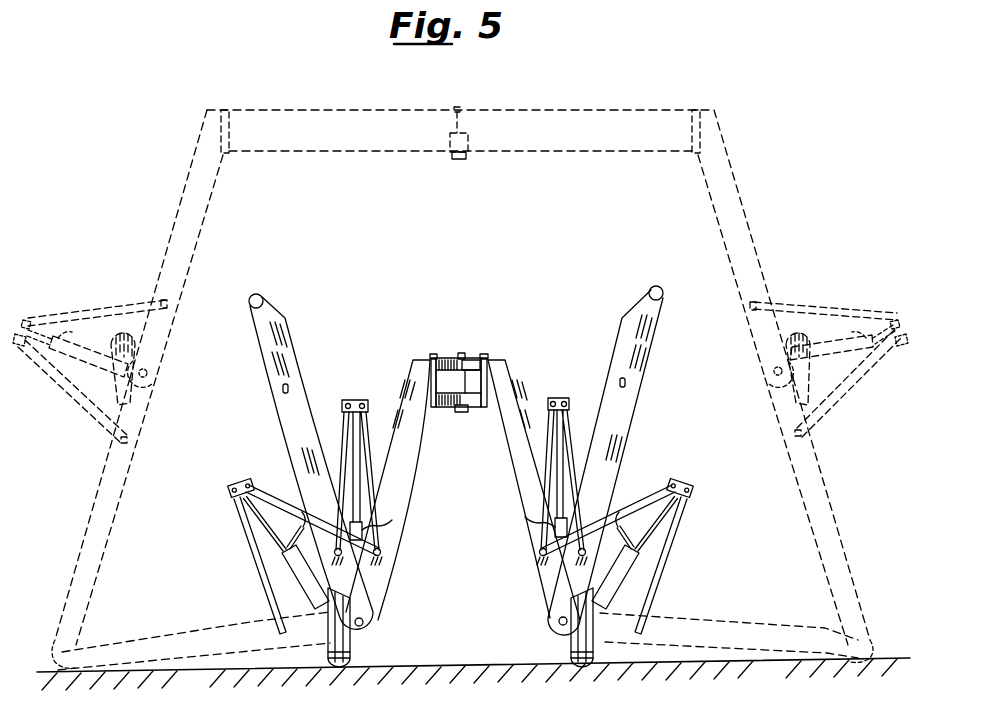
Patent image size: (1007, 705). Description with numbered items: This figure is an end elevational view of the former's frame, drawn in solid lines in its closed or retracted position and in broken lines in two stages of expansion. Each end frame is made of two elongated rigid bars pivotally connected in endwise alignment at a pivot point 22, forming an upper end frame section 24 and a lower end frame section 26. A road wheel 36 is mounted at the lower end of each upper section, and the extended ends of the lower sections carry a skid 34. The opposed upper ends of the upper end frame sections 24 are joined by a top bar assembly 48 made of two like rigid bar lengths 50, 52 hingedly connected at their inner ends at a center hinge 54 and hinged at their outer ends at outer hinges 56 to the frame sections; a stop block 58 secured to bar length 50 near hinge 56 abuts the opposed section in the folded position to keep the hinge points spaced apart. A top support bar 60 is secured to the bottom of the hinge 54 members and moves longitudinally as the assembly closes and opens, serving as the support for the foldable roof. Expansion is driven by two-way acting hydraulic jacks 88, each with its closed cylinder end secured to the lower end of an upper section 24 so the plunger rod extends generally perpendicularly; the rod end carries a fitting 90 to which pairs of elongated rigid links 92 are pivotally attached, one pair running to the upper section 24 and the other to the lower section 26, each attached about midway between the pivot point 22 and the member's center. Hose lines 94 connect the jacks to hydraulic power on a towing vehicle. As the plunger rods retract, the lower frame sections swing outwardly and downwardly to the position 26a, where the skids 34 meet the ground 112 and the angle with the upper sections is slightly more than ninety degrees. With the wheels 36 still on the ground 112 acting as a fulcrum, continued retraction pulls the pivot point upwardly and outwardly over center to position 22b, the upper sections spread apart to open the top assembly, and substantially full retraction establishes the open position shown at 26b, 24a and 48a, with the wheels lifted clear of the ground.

The pivot point 22 is at (363, 622).
The pivot point in open position 22b is at (148, 373).
The upper end frame section 24 is at (522, 385).
The upper end frame section in open position 24a is at (206, 212).
The lower end frame section 26 is at (642, 347).
The lower end frame section in first position 26a is at (170, 628).
The lower end frame section in open position 26b is at (118, 494).
The skid 34 is at (50, 648).
The road wheel 36 is at (351, 650).
The top bar assembly 48 is at (459, 338).
The top bar assembly in open position 48a is at (530, 160).
The rigid bar length 50 is at (472, 354).
The rigid bar length 52 is at (445, 358).
The center hinge 54 is at (464, 353).
The outer hinge 56 is at (228, 108).
The stop block 58 is at (468, 402).
The top support bar 60 is at (457, 407).
The hydraulic jack 88 is at (338, 398).
The fitting 90 is at (360, 400).
The link 92 is at (343, 440).
The hose line 94 is at (387, 530).
The ground 112 is at (203, 673).